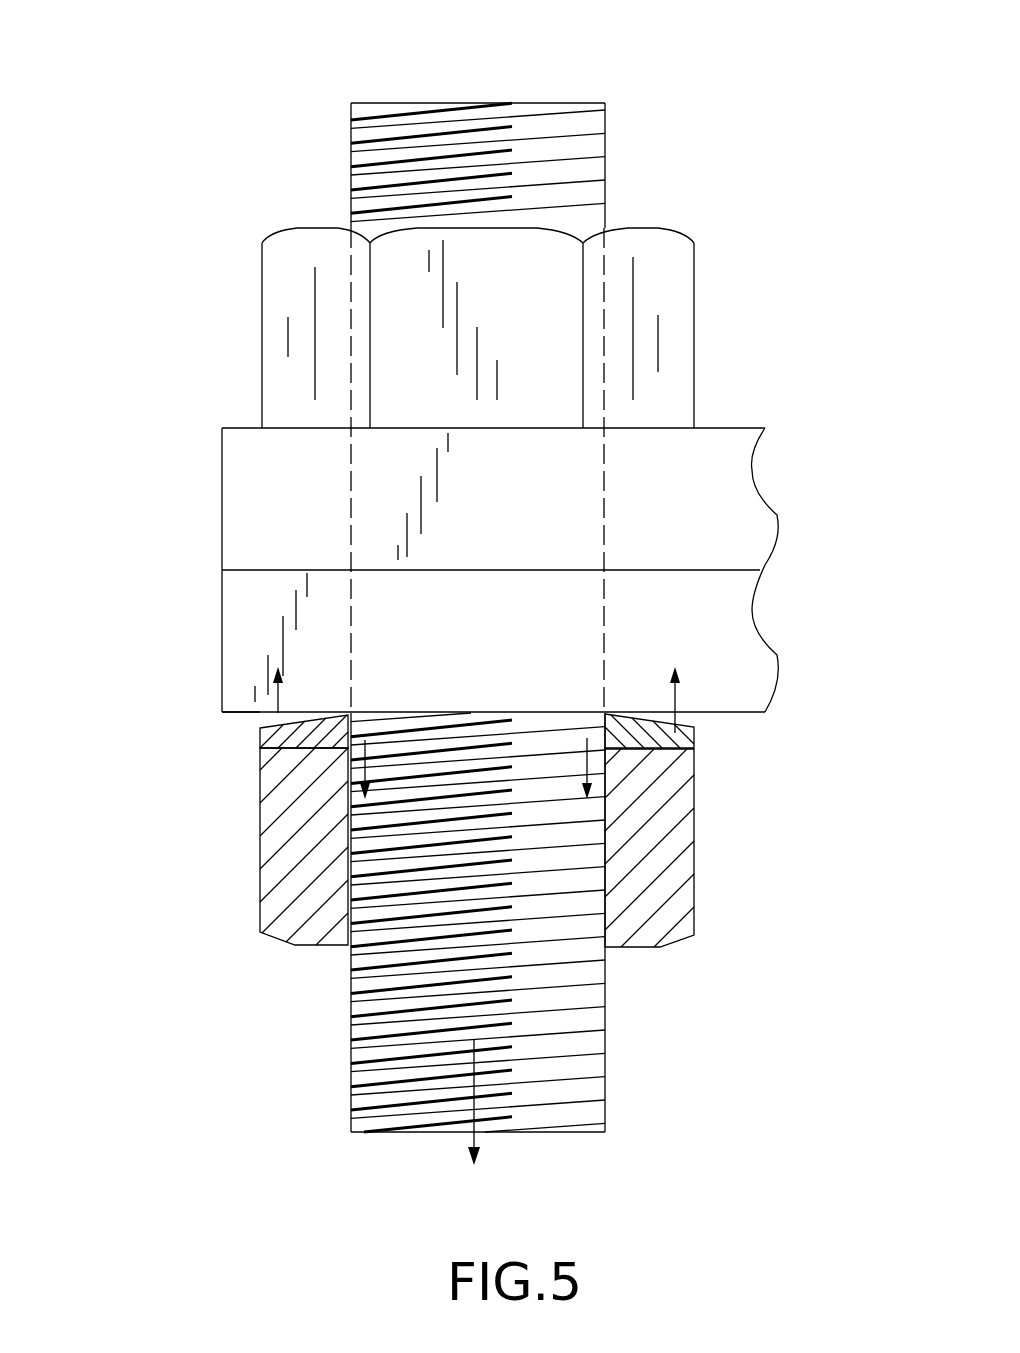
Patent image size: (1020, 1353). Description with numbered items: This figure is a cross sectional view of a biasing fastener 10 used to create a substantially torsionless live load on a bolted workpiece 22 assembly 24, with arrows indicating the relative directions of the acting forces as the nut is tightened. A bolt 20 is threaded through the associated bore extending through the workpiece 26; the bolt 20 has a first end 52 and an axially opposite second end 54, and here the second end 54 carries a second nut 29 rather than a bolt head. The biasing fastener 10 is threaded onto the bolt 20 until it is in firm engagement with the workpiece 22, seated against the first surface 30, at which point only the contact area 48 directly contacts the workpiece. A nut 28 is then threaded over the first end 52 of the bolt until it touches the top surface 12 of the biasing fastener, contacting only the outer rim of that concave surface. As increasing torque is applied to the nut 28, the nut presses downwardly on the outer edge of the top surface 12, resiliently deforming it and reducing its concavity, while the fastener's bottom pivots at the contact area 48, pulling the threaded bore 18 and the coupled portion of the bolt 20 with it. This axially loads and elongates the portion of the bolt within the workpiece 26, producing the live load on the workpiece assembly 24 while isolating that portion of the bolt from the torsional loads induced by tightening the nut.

The biasing fastener 10 is at (700, 742).
The top surface 12 is at (313, 742).
The threaded bore 18 is at (351, 667).
The bolt 20 is at (440, 745).
The workpiece 22 is at (237, 456).
The workpiece assembly 24 is at (148, 953).
The workpiece 26 is at (792, 427).
The nut 28 is at (682, 837).
The second nut 29 is at (680, 270).
The first surface 30 is at (237, 713).
The contact area 48 is at (338, 713).
The first end 52 is at (412, 1133).
The second end 54 is at (563, 102).